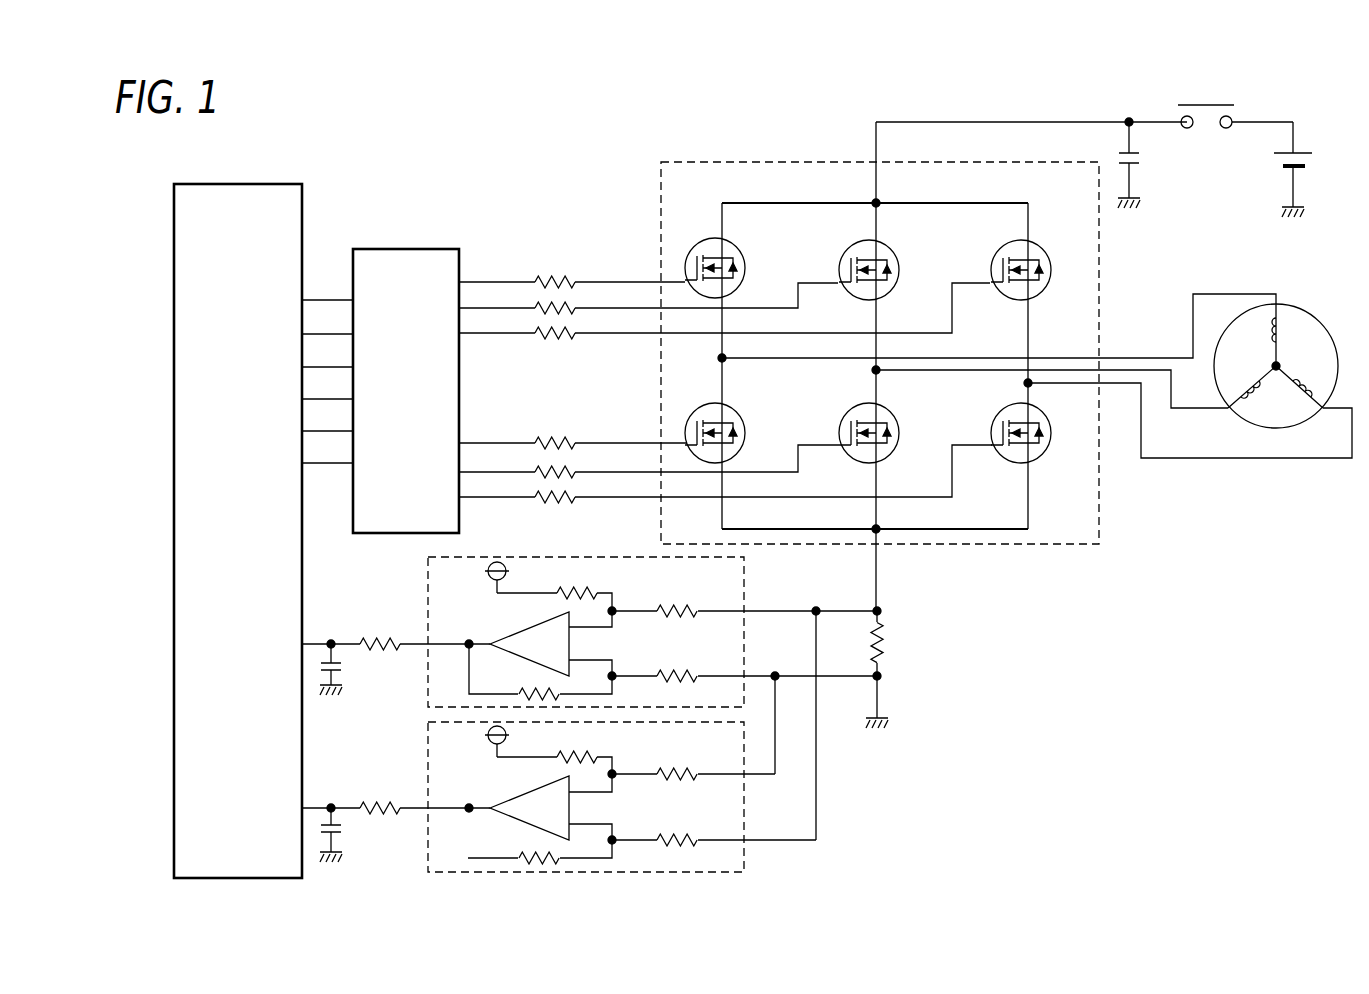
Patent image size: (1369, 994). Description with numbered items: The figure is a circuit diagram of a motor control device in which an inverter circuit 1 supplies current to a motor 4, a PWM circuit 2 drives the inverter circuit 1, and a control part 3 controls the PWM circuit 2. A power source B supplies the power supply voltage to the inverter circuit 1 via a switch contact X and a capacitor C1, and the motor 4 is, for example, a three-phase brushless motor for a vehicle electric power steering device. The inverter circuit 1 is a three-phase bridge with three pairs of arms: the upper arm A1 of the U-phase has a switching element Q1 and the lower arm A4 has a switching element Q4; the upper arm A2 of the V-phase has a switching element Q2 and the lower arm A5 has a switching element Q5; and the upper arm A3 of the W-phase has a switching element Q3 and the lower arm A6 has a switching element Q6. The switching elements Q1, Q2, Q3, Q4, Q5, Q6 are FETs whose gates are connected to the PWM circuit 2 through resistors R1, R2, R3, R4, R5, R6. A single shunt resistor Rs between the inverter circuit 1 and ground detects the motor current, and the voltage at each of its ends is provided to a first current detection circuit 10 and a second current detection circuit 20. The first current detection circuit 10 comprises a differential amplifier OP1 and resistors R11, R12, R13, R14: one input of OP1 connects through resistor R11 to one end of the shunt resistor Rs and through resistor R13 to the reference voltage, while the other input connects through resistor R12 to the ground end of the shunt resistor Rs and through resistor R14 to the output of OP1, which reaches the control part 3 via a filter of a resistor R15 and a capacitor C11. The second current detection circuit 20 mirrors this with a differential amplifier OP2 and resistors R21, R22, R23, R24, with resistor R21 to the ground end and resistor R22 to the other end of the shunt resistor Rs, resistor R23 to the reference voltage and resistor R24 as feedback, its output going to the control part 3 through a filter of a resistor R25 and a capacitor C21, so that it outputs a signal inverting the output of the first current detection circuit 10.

The inverter circuit 1 is at (656, 206).
The PWM circuit 2 is at (411, 249).
The control part 3 is at (174, 472).
The motor 4 is at (1321, 318).
The first current detection circuit 10 is at (749, 637).
The second current detection circuit 20 is at (749, 805).
The switching element Q1 is at (731, 250).
The switching element Q2 is at (884, 211).
The switching element Q3 is at (1037, 251).
The switching element Q4 is at (732, 466).
The switching element Q5 is at (885, 507).
The switching element Q6 is at (1038, 466).
The upper arm A1 is at (727, 218).
The upper arm A2 is at (880, 218).
The upper arm A3 is at (1032, 218).
The lower arm A4 is at (727, 382).
The lower arm A5 is at (881, 386).
The lower arm A6 is at (1033, 392).
The resistor R1 is at (572, 272).
The resistor R2 is at (648, 298).
The resistor R3 is at (724, 323).
The resistor R4 is at (573, 433).
The resistor R5 is at (649, 461).
The resistor R6 is at (725, 486).
The resistor R11 is at (746, 600).
The resistor R12 is at (746, 665).
The resistor R13 is at (556, 597).
The resistor R14 is at (542, 672).
The resistor R15 is at (396, 632).
The resistor R21 is at (693, 763).
The resistor R22 is at (714, 829).
The resistor R23 is at (556, 761).
The resistor R24 is at (542, 844).
The resistor R25 is at (396, 796).
The shunt resistor Rs is at (891, 669).
The capacitor C1 is at (1145, 163).
The capacitor C11 is at (350, 669).
The capacitor C21 is at (350, 835).
The differential amplifier OP1 is at (510, 619).
The differential amplifier OP2 is at (510, 783).
The switch contact X is at (1235, 128).
The power source B is at (1304, 169).